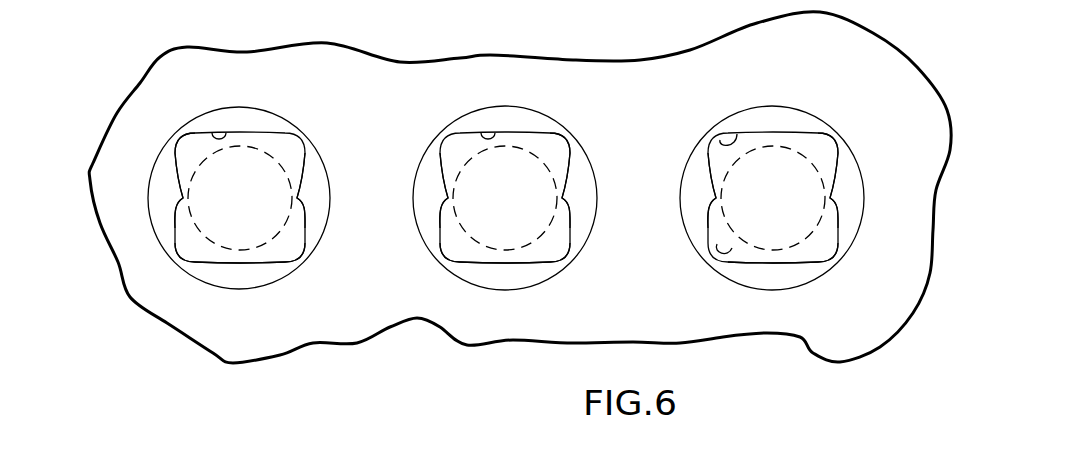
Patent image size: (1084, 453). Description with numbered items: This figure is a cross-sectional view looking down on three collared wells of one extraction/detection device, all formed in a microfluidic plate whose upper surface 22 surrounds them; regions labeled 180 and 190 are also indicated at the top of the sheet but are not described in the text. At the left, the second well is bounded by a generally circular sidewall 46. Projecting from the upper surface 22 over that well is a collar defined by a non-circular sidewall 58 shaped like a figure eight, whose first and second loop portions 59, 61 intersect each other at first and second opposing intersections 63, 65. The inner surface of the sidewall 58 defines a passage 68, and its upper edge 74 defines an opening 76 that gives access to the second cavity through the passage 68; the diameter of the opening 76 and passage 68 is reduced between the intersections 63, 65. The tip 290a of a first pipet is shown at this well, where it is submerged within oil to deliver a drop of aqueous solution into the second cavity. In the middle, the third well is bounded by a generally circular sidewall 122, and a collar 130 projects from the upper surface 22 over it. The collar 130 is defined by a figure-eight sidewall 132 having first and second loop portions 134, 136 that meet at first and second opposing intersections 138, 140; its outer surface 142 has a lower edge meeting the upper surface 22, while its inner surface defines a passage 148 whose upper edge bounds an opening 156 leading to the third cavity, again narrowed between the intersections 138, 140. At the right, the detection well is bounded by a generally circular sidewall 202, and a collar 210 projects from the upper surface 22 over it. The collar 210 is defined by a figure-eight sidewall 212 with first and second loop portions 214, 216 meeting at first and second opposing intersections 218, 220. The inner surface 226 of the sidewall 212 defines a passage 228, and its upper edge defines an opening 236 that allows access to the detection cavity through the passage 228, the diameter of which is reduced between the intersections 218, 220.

The upper surface 22 is at (380, 112).
The tooth region 180 is at (373, 4).
The tooth region 190 is at (467, 6).
The sidewall 46 is at (167, 140).
The upper edge 74 is at (223, 135).
The opening 76 is at (247, 131).
The passage 68 is at (284, 147).
The first loop portion 59 is at (187, 141).
The first intersection 63 is at (182, 197).
The second intersection 65 is at (297, 201).
The second loop portion 61 is at (202, 262).
The sidewall 58 is at (270, 268).
The tip 290a is at (240, 252).
The sidewall 122 is at (548, 115).
The first loop portion 134 is at (459, 134).
The opening 156 is at (494, 133).
The passage 148 is at (535, 147).
The outer surface 142 is at (568, 143).
The first intersection 138 is at (446, 197).
The second intersection 140 is at (561, 199).
The sidewall 132 is at (549, 258).
The second loop portion 136 is at (480, 262).
The collar 130 is at (512, 268).
The sidewall 202 is at (833, 123).
The first loop portion 214 is at (767, 133).
The inner surface 226 is at (721, 143).
The collar 210 is at (809, 130).
The sidewall 212 is at (838, 146).
The second intersection 220 is at (831, 197).
The first intersection 218 is at (717, 197).
The opening 236 is at (723, 252).
The passage 228 is at (818, 250).
The second loop portion 216 is at (781, 262).